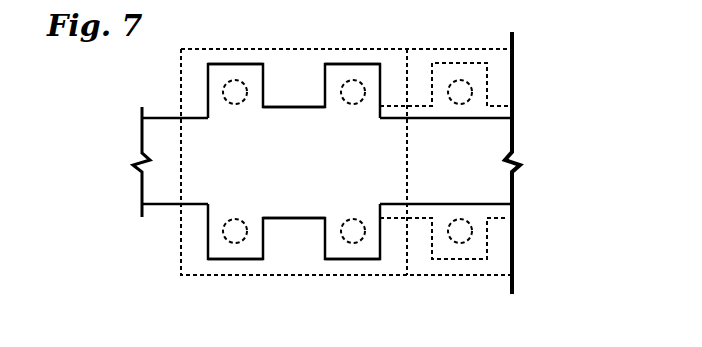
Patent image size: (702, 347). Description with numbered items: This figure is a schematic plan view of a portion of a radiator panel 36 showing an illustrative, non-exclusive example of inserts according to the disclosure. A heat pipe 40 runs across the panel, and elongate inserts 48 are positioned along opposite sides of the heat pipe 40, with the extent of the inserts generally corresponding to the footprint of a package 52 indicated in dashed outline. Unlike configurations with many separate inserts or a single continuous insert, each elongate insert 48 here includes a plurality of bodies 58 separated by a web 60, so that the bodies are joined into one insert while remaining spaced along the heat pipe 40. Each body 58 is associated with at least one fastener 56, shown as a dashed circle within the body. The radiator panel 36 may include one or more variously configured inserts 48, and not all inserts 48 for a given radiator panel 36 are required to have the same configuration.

The radiator panel 36 is at (541, 45).
The heat pipe 40 is at (170, 117).
The insert 48 is at (222, 63).
The package 52 is at (278, 48).
The fastener 56 is at (235, 219).
The body 58 is at (237, 63).
The web 60 is at (303, 103).